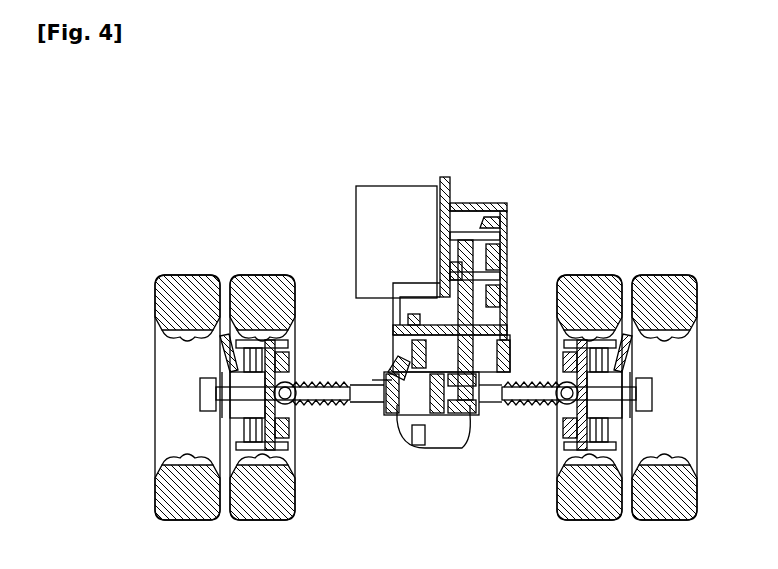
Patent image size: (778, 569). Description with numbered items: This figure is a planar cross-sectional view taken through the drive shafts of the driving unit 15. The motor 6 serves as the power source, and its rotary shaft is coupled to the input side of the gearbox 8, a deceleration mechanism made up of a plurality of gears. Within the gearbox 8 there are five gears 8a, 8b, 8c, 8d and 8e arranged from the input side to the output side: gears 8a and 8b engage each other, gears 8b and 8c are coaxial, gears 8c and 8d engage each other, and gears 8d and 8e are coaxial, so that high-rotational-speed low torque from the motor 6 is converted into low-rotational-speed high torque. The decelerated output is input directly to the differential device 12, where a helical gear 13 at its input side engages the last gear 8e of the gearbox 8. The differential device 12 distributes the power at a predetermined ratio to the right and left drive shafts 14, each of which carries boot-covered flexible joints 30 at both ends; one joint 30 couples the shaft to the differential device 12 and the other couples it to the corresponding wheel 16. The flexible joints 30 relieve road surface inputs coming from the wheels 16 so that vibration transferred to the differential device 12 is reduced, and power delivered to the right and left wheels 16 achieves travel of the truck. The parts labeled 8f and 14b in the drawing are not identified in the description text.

The motor 6 is at (398, 186).
The gearbox 8 is at (472, 203).
The driving unit 15 is at (497, 188).
The gear 8a is at (490, 225).
The gear 8b is at (508, 262).
The gear 8c is at (450, 270).
The gear 8d is at (500, 298).
The gear 8e is at (406, 318).
The output gear 8f is at (408, 360).
The helical gear 13 is at (390, 374).
The flexible joint 30 is at (307, 382).
The drive shaft 14 is at (321, 405).
The wheel hub 14b is at (210, 382).
The wheel 16 is at (188, 275).
The differential device 12 is at (435, 450).